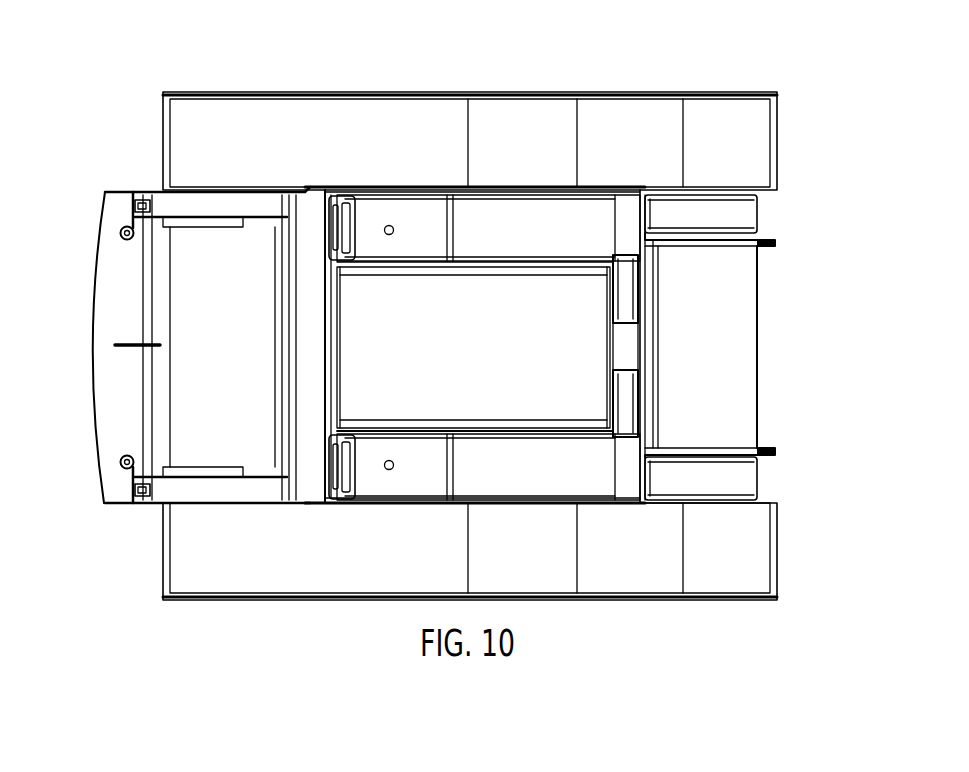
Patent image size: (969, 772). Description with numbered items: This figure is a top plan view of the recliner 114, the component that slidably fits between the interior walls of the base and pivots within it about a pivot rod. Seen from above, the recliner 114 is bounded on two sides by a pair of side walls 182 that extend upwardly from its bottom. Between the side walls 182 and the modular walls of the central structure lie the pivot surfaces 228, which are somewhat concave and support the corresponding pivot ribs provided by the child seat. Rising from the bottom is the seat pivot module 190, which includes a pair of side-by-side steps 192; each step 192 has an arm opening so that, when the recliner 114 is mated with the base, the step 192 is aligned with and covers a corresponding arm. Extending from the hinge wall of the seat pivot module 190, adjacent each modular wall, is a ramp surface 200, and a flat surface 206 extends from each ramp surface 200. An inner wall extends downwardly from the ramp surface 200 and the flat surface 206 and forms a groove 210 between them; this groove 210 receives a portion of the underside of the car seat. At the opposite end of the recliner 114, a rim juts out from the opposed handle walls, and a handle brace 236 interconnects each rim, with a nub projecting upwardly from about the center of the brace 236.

The recliner 114 is at (697, 77).
The side walls 182 is at (320, 92).
The pivot surface 228 is at (361, 156).
The handle brace 236 is at (117, 405).
The ramp surface 200 is at (547, 240).
The flat surface 206 is at (436, 240).
The groove 210 is at (471, 366).
The seat pivot module 190 is at (646, 350).
The steps 192 is at (710, 225).